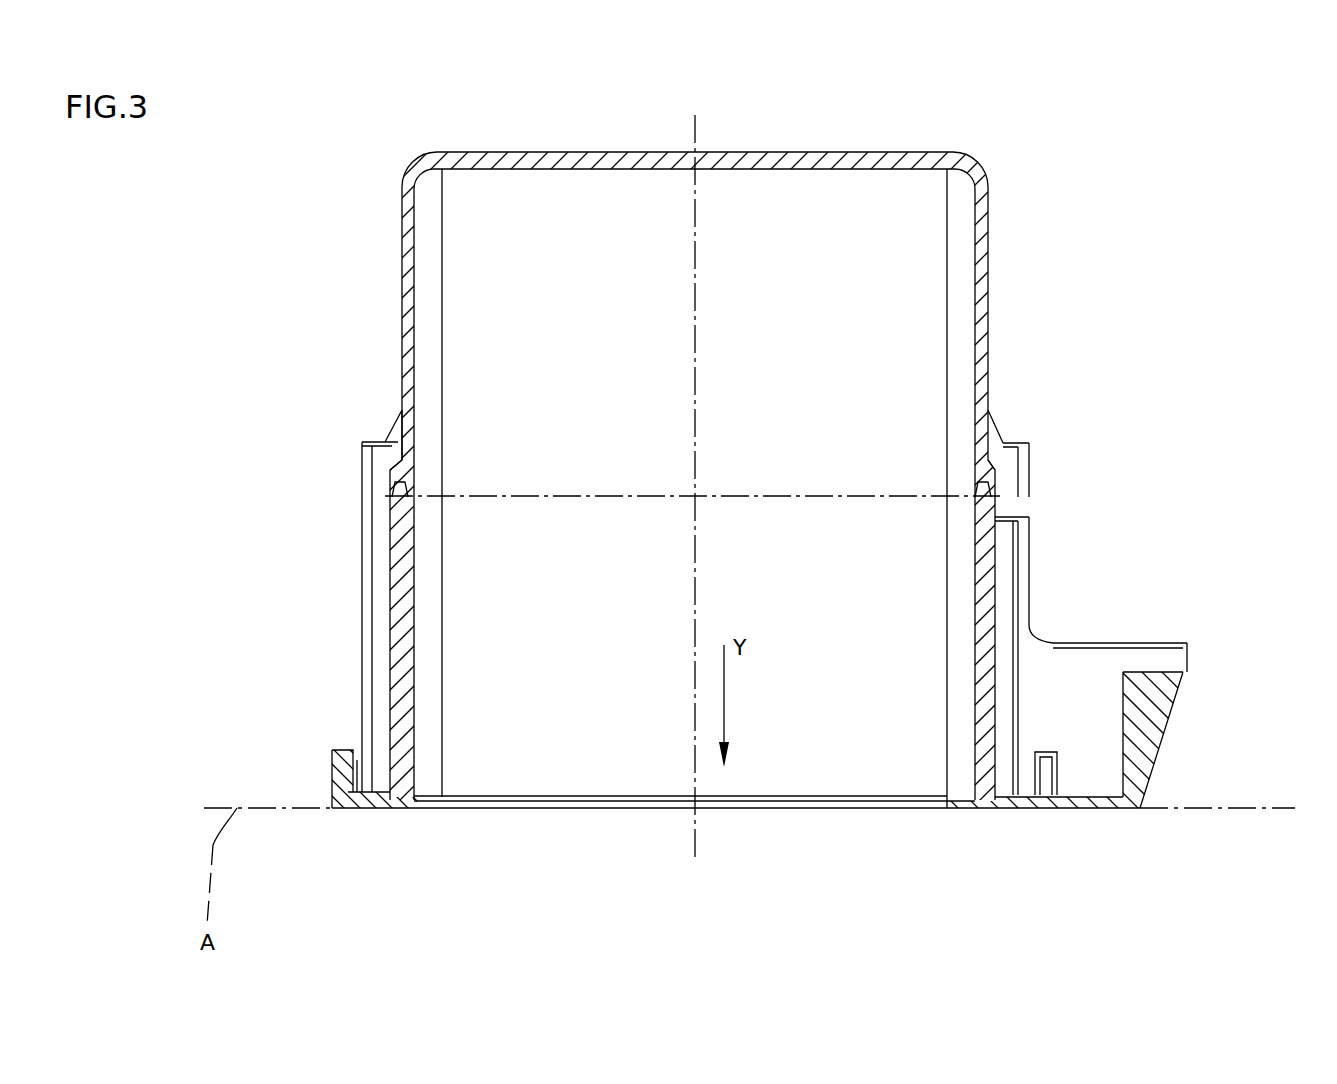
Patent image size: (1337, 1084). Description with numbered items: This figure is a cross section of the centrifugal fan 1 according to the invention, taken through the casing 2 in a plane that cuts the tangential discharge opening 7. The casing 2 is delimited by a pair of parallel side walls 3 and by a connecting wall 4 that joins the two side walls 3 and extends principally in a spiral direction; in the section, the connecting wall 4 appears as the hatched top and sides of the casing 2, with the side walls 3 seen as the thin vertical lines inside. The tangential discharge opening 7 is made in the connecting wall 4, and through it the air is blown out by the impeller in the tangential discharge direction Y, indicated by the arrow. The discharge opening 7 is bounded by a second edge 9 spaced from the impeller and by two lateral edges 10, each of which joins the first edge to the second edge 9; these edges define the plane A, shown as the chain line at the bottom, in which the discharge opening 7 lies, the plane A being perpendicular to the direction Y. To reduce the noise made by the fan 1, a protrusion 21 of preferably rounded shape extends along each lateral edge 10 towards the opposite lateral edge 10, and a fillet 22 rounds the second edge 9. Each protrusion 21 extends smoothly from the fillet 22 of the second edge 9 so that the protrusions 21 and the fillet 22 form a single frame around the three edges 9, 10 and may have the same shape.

The centrifugal fan 1 is at (1108, 351).
The casing 2 is at (992, 302).
The side walls 3 is at (396, 318).
The connecting wall 4 is at (874, 152).
The tangential discharge opening 7 is at (815, 772).
The second edge 9 is at (597, 810).
The lateral edges 10 is at (410, 808).
The protrusion 21 is at (418, 808).
The fillet 22 is at (712, 803).